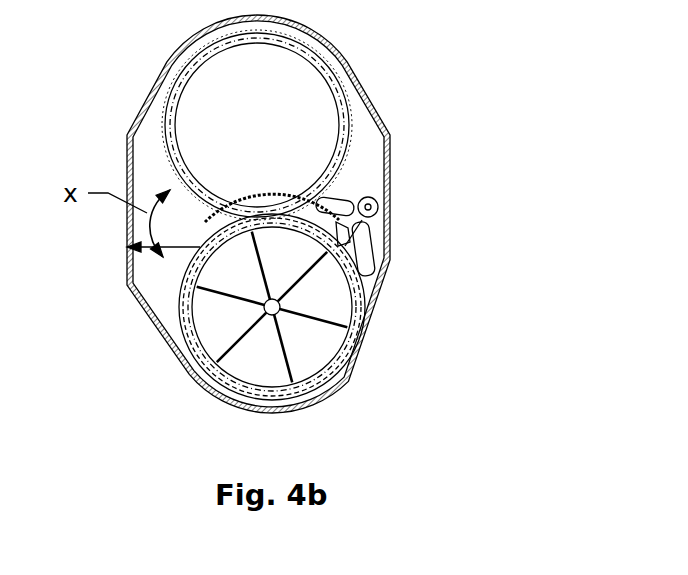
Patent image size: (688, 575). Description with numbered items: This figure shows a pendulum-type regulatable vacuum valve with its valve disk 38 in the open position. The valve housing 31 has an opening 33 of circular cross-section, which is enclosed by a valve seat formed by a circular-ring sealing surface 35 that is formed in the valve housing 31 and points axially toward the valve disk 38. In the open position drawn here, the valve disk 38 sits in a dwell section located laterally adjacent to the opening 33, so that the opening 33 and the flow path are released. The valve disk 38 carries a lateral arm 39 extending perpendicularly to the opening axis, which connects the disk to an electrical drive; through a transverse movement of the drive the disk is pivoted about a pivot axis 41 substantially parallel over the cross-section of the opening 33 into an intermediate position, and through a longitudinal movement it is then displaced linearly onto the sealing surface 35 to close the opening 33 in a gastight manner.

The valve housing 31 is at (135, 87).
The opening 33 is at (305, 87).
The sealing surface 35 is at (344, 126).
The valve disk 38 is at (330, 305).
The arm 39 is at (363, 263).
The pivot axis 41 is at (368, 207).